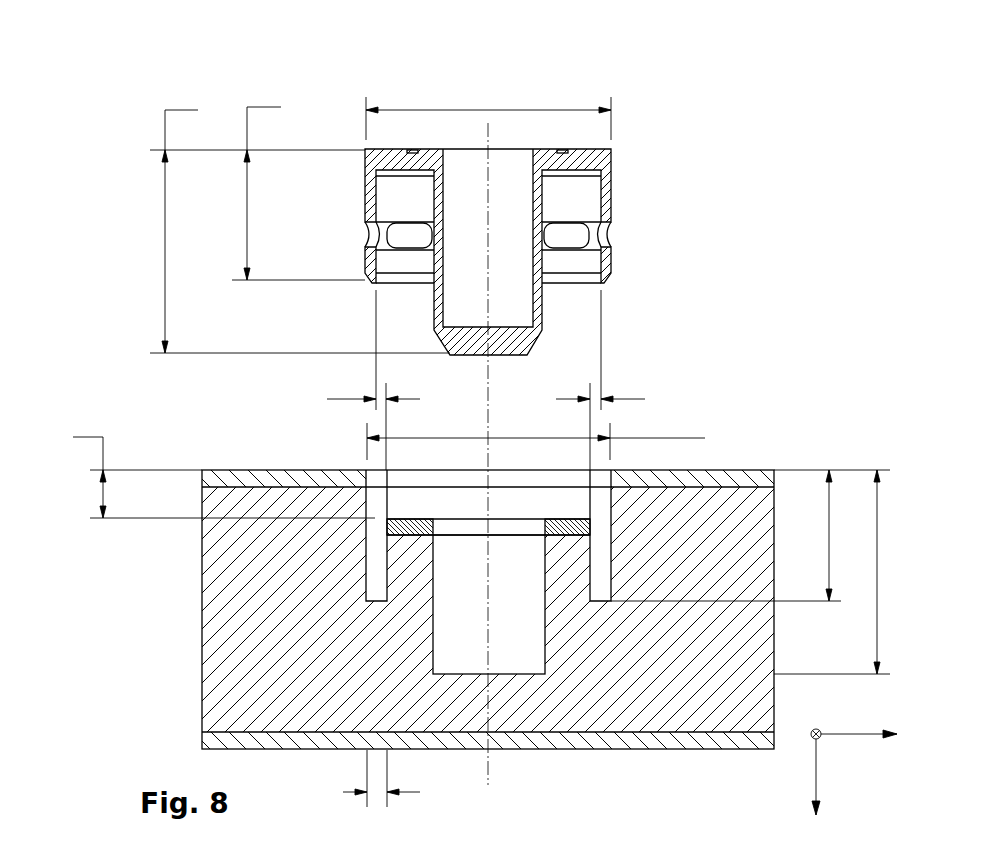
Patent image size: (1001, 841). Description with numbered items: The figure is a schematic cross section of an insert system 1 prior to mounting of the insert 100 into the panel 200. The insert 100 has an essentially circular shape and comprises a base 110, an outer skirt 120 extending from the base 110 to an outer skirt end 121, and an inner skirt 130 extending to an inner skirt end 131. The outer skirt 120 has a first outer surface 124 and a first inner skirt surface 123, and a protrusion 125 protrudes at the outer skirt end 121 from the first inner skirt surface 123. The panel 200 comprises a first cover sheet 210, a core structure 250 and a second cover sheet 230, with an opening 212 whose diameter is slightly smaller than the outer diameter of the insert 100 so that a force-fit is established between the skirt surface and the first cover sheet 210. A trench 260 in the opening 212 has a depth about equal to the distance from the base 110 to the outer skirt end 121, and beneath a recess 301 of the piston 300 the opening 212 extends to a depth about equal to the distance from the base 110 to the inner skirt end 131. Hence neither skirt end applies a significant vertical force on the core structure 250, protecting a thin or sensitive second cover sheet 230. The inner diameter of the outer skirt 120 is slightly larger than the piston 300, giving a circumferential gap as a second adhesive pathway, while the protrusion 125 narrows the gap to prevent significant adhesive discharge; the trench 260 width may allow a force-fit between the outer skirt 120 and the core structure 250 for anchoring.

The insert system 1 is at (470, 433).
The insert 100 is at (637, 416).
The base 110 is at (637, 201).
The outer skirt 120 is at (637, 165).
The outer skirt end 121 is at (637, 259).
The first inner skirt surface 123 is at (642, 158).
The first outer surface 124 is at (648, 195).
The protrusion 125 is at (637, 231).
The inner skirt 130 is at (543, 302).
The inner skirt end 131 is at (527, 354).
The panel 200 is at (760, 405).
The first cover sheet 210 is at (555, 465).
The opening 212 is at (310, 524).
The second cover sheet 230 is at (402, 762).
The core structure 250 is at (402, 611).
The trench 260 is at (320, 587).
The piston 300 is at (310, 587).
The recess 301 is at (310, 587).